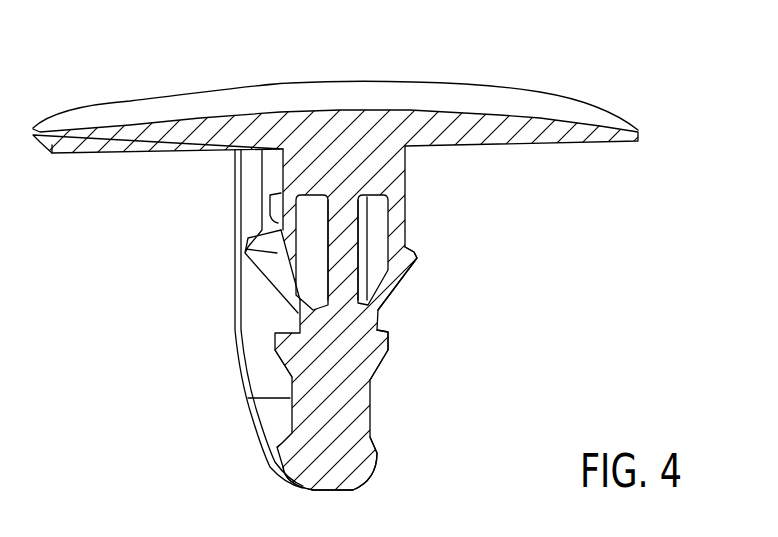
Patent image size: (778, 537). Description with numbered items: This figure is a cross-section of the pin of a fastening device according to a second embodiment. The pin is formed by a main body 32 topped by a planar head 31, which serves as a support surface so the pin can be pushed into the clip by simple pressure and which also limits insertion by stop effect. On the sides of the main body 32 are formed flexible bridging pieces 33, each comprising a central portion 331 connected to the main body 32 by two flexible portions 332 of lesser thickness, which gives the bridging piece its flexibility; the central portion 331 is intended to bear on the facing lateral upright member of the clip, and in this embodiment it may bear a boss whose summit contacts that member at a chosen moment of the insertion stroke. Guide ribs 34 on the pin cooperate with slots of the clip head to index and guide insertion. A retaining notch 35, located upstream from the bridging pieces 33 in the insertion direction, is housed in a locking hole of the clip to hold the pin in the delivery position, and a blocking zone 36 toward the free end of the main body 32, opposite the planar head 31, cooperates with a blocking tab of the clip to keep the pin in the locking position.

The planar head 31 is at (393, 110).
The main body 32 is at (145, 163).
The flexible bridging piece 33 is at (482, 195).
The central portion 331 is at (430, 250).
The flexible portion 332 is at (428, 195).
The guide rib 34 is at (227, 330).
The retaining notch 35 is at (383, 348).
The blocking zone 36 is at (367, 458).